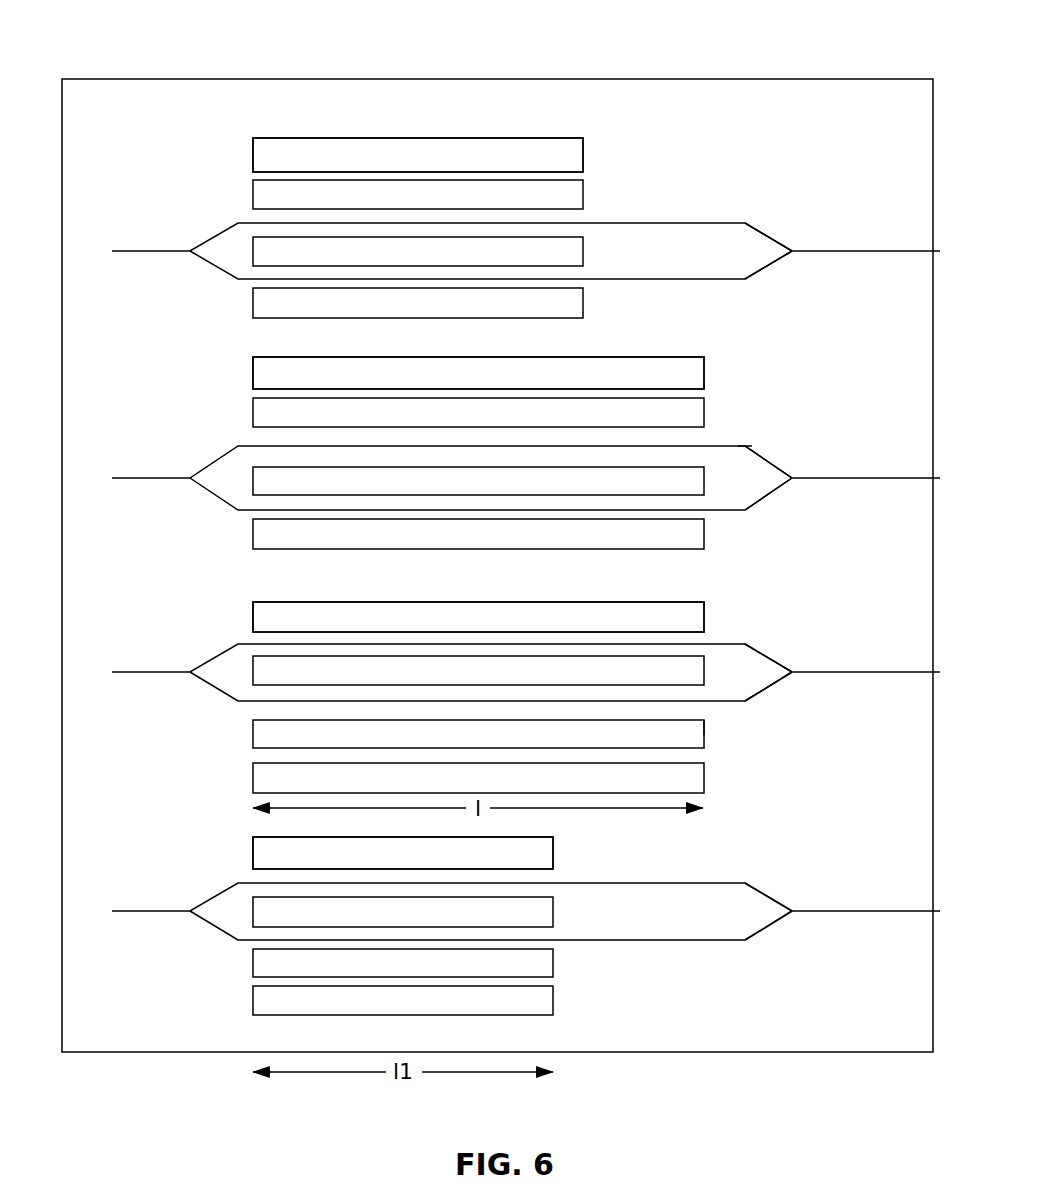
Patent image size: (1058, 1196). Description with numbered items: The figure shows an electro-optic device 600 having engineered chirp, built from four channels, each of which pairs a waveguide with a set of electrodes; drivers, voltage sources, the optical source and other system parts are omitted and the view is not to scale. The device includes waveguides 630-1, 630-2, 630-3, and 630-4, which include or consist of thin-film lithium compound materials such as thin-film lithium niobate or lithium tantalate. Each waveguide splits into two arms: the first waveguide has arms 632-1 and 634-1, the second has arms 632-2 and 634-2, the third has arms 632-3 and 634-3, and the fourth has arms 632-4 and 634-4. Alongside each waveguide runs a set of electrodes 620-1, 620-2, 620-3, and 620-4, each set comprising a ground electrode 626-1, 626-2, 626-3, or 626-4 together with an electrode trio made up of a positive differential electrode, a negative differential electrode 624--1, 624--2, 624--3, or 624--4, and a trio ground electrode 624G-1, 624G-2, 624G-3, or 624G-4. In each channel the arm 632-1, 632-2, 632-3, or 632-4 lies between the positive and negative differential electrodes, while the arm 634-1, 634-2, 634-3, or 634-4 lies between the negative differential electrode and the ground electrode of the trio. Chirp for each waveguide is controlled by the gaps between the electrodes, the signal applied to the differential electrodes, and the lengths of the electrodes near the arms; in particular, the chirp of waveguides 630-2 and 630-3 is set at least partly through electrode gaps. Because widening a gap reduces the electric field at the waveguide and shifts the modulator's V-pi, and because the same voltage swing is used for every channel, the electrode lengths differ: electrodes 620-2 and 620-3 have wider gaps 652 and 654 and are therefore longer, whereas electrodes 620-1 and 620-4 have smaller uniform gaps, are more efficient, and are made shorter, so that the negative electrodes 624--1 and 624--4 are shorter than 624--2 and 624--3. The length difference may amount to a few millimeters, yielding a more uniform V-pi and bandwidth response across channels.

The electro-optic device 600 is at (497, 532).
The electrodes 620-1 is at (215, 170).
The electrodes 620-2 is at (242, 390).
The electrodes 620-3 is at (242, 630).
The electrodes 620-4 is at (227, 852).
The waveguide 630-1 is at (215, 213).
The waveguide 630-2 is at (220, 430).
The waveguide 630-3 is at (205, 638).
The waveguide 630-4 is at (200, 890).
The ground electrode 626-1 is at (418, 155).
The ground electrode 626-2 is at (478, 373).
The ground electrode 626-3 is at (478, 617).
The ground electrode 626-4 is at (403, 853).
The differential electrode 624--1 is at (418, 251).
The differential electrode 624--2 is at (478, 481).
The differential electrode 624--3 is at (478, 734).
The differential electrode 624--4 is at (403, 963).
The ground electrode 624G-1 is at (418, 303).
The ground electrode 624G-2 is at (478, 534).
The ground electrode 624G-3 is at (478, 778).
The ground electrode 624G-4 is at (403, 1000).
The waveguide arm 632-1 is at (747, 224).
The waveguide arm 632-2 is at (765, 462).
The waveguide arm 632-3 is at (767, 658).
The waveguide arm 632-4 is at (770, 898).
The waveguide arm 634-1 is at (743, 280).
The waveguide arm 634-2 is at (767, 490).
The waveguide arm 634-3 is at (770, 687).
The waveguide arm 634-4 is at (768, 927).
The gap 652 is at (715, 440).
The gap 654 is at (706, 713).